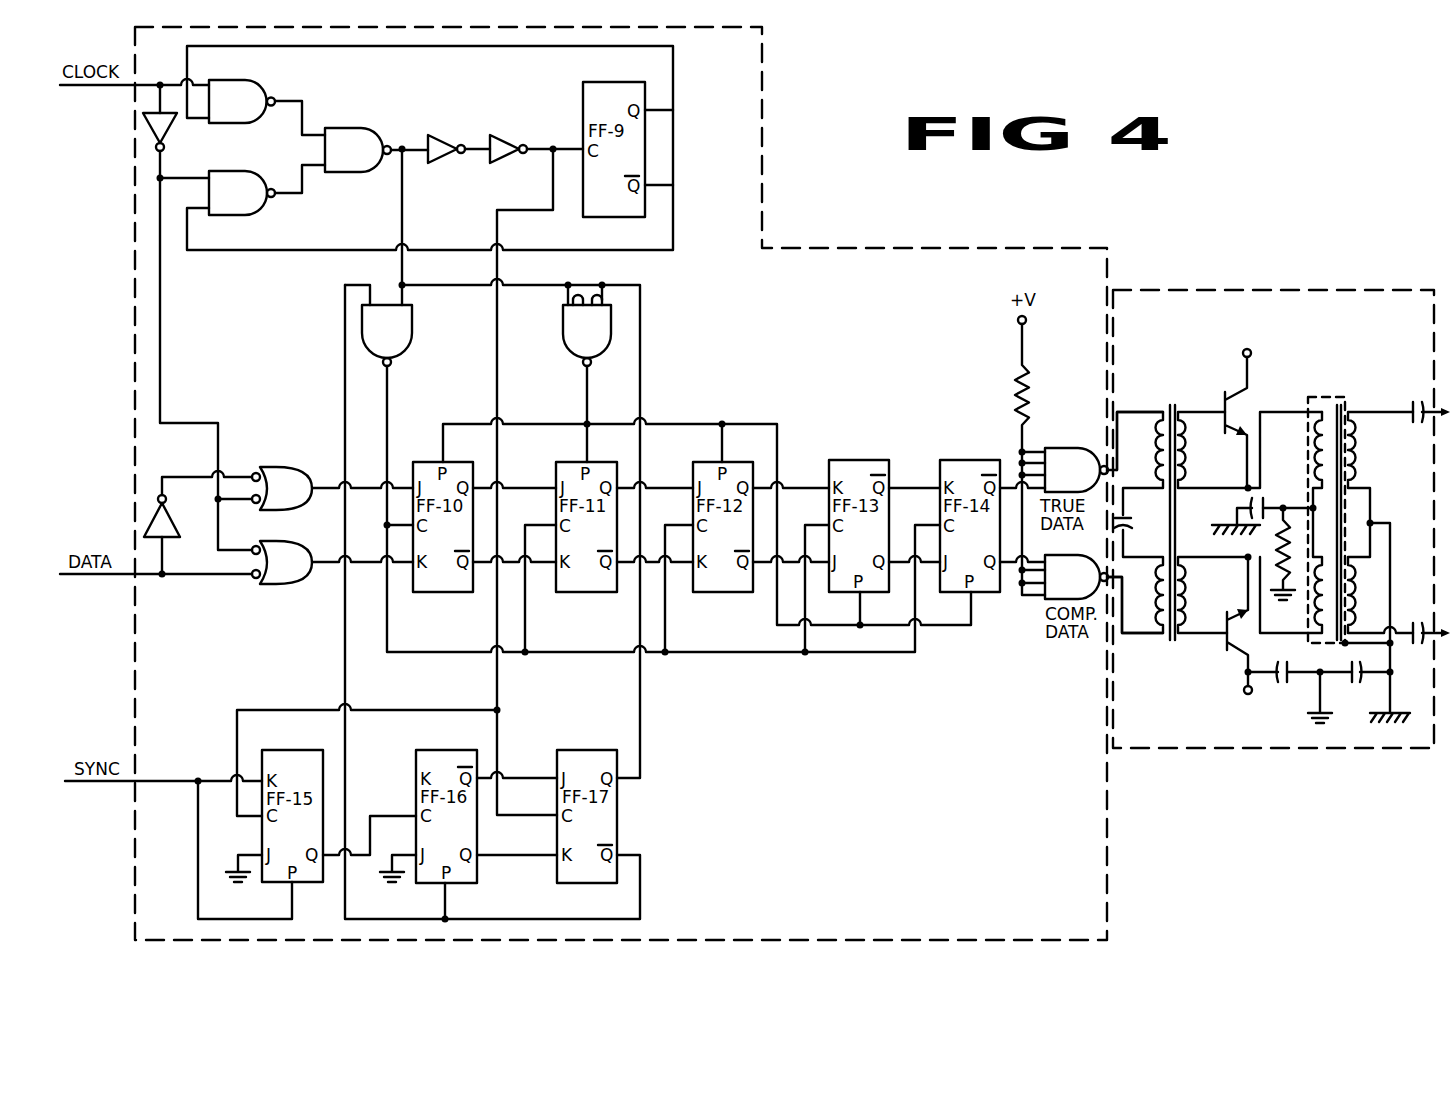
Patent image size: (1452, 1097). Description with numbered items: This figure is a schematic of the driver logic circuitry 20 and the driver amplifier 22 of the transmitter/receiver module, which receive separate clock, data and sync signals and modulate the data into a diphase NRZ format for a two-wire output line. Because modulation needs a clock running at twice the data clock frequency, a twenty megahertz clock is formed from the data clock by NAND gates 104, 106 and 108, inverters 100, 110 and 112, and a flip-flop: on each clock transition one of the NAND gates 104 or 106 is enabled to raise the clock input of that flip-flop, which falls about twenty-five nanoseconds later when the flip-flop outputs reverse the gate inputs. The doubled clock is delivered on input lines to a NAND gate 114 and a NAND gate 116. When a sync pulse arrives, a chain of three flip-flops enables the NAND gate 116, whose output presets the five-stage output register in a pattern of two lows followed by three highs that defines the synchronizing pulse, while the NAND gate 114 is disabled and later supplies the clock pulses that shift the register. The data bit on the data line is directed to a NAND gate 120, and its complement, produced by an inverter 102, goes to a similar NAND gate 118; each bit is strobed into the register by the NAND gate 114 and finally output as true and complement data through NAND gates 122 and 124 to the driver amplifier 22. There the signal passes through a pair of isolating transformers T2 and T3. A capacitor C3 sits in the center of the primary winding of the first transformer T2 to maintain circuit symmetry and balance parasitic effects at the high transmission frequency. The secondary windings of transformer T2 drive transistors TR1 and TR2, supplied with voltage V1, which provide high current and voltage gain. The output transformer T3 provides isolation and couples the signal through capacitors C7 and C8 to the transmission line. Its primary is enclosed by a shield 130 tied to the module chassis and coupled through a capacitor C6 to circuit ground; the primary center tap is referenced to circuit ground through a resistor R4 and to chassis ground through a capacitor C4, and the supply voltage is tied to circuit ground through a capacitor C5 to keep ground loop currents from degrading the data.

The driver logic circuitry 20 is at (796, 30).
The driver amplifier 22 is at (1170, 290).
The inverter 100 is at (168, 135).
The inverter 102 is at (178, 520).
The NAND gate 104 is at (258, 81).
The NAND gate 106 is at (266, 207).
The NAND gate 108 is at (343, 128).
The inverter 110 is at (450, 163).
The inverter 112 is at (501, 136).
The NAND gate 114 is at (414, 334).
The NAND gate 116 is at (561, 334).
The NAND gate 118 is at (290, 458).
The NAND gate 120 is at (278, 586).
The NAND gate 122 is at (1072, 448).
The NAND gate 124 is at (1050, 600).
The shield 130 is at (1323, 394).
The first transformer T2 is at (1173, 405).
The output transformer T3 is at (1353, 410).
The transistor TR1 is at (1233, 409).
The transistor TR2 is at (1224, 642).
The capacitor C3 is at (1145, 515).
The capacitor C4 is at (1248, 507).
The capacitor C5 is at (1275, 664).
The capacitor C6 is at (1338, 680).
The capacitor C7 is at (1412, 422).
The capacitor C8 is at (1412, 624).
The resistor R4 is at (1290, 556).